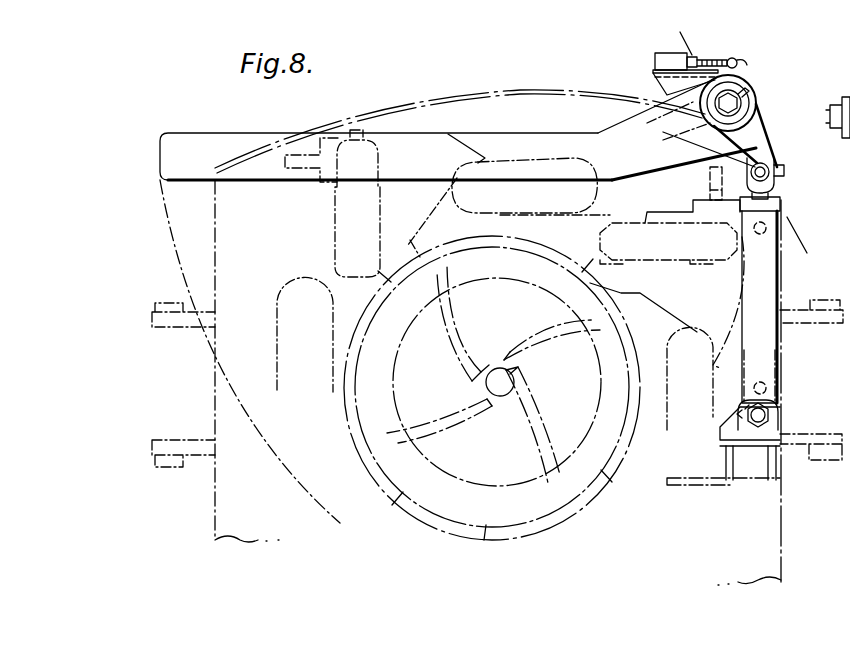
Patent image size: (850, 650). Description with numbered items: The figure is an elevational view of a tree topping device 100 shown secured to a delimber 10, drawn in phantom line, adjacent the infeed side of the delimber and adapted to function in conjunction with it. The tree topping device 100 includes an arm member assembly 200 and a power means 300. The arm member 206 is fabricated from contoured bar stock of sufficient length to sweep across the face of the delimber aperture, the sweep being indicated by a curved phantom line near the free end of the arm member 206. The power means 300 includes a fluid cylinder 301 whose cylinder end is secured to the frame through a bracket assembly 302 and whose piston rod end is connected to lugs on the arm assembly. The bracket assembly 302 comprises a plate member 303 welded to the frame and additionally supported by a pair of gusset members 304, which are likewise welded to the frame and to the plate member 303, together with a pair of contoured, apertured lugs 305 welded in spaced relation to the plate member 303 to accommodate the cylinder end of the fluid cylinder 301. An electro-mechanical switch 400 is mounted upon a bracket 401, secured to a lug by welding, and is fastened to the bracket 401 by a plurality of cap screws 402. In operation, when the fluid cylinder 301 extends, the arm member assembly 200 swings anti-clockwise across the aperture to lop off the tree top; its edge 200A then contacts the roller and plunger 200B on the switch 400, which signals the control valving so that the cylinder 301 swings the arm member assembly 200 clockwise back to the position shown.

The delimber 10 is at (691, 40).
The tree topping device 100 is at (448, 336).
The arm member assembly 200 is at (527, 139).
The edge 200A is at (660, 157).
The roller and plunger 200B is at (738, 74).
The arm member 206 is at (612, 170).
The power means 300 is at (771, 306).
The fluid cylinder 301 is at (763, 367).
The bracket assembly 302 is at (730, 440).
The plate member 303 is at (778, 440).
The gusset members 304 is at (770, 484).
The lugs 305 is at (766, 433).
The electro-mechanical switch 400 is at (741, 65).
The bracket 401 is at (672, 85).
The cap screws 402 is at (655, 63).